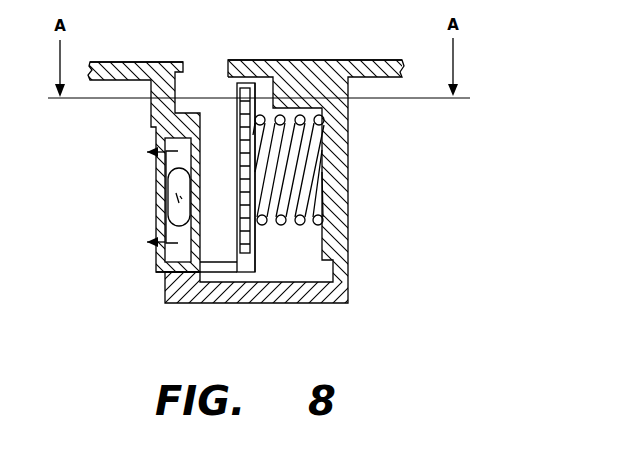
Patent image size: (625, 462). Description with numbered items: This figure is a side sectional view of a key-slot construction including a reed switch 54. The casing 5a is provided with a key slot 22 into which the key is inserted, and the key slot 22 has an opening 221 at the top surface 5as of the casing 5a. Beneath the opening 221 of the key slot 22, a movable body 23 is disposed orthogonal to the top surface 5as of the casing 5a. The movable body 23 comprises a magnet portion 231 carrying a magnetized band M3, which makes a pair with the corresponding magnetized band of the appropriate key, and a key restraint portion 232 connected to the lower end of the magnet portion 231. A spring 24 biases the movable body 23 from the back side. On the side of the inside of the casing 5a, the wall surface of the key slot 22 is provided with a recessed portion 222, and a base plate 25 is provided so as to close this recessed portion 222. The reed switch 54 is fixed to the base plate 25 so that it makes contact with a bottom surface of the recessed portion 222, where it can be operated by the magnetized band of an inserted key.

The casing 5a is at (337, 143).
The top surface of the casing 5as is at (298, 60).
The key slot 22 is at (213, 123).
The opening of the key slot 221 is at (200, 65).
The recessed portion 222 is at (180, 282).
The movable body 23 is at (261, 254).
The magnet portion 231 is at (251, 234).
The key restraint portion 232 is at (238, 283).
The spring 24 is at (307, 183).
The base plate 25 is at (150, 222).
The reed switch 54 is at (176, 182).
The magnetized band M3 is at (236, 150).